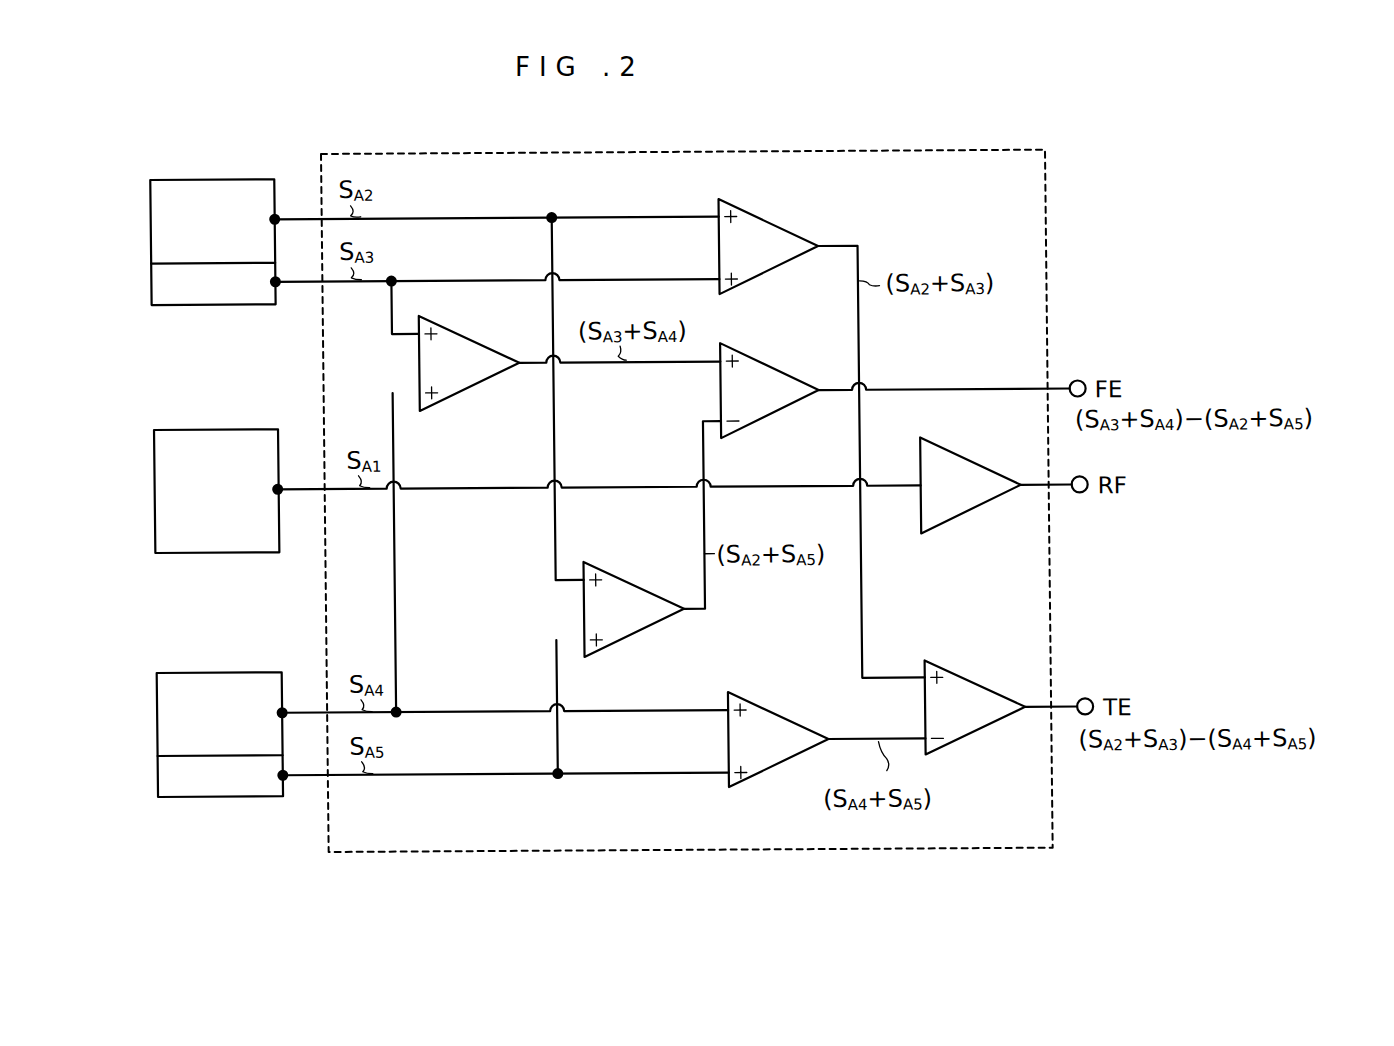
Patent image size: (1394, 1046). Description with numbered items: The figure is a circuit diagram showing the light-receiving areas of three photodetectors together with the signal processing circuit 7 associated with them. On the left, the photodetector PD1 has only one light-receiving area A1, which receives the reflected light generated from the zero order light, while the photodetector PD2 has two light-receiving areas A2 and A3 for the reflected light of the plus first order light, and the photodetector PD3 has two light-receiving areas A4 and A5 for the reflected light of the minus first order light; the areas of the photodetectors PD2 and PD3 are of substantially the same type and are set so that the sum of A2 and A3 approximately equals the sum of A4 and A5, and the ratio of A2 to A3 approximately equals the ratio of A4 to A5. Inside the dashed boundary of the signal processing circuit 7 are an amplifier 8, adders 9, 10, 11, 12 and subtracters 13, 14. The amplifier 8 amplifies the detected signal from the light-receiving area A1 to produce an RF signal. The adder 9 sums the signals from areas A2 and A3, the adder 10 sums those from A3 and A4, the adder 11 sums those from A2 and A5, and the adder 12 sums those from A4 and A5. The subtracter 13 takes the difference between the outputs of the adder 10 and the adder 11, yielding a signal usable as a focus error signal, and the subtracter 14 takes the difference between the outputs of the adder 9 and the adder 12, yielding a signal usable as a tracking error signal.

The signal processing circuit 7 is at (737, 153).
The amplifier 8 is at (958, 458).
The adder 9 is at (773, 230).
The adder 10 is at (482, 346).
The adder 11 is at (634, 590).
The adder 12 is at (790, 730).
The subtracter 13 is at (776, 372).
The subtracter 14 is at (971, 680).
The photodetector PD1 is at (177, 467).
The photodetector PD2 is at (172, 243).
The photodetector PD3 is at (182, 740).
The light-receiving area A1 is at (241, 437).
The light-receiving area A2 is at (238, 190).
The light-receiving area A3 is at (217, 294).
The light-receiving area A4 is at (240, 680).
The light-receiving area A5 is at (226, 790).